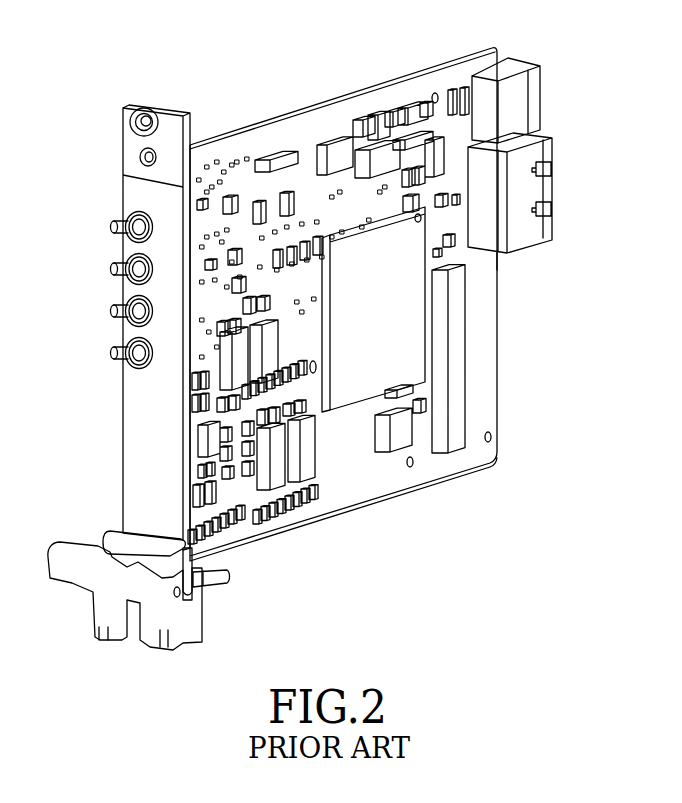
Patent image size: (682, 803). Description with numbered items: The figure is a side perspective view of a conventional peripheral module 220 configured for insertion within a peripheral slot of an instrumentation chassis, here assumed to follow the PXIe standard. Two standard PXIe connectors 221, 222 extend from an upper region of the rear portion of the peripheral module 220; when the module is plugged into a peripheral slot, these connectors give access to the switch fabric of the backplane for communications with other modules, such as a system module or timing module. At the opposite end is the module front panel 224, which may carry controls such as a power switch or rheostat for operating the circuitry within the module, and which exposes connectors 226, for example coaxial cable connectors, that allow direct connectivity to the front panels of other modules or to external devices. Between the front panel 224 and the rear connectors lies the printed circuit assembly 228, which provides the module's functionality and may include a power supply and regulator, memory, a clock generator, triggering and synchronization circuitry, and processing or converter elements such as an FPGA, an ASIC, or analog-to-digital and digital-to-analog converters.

The peripheral module 220 is at (363, 45).
The PXIe connector 221 is at (530, 98).
The PXIe connector 222 is at (535, 187).
The module front panel 224 is at (132, 190).
The exposed connectors 226 is at (97, 212).
The printed circuit assembly 228 is at (367, 466).